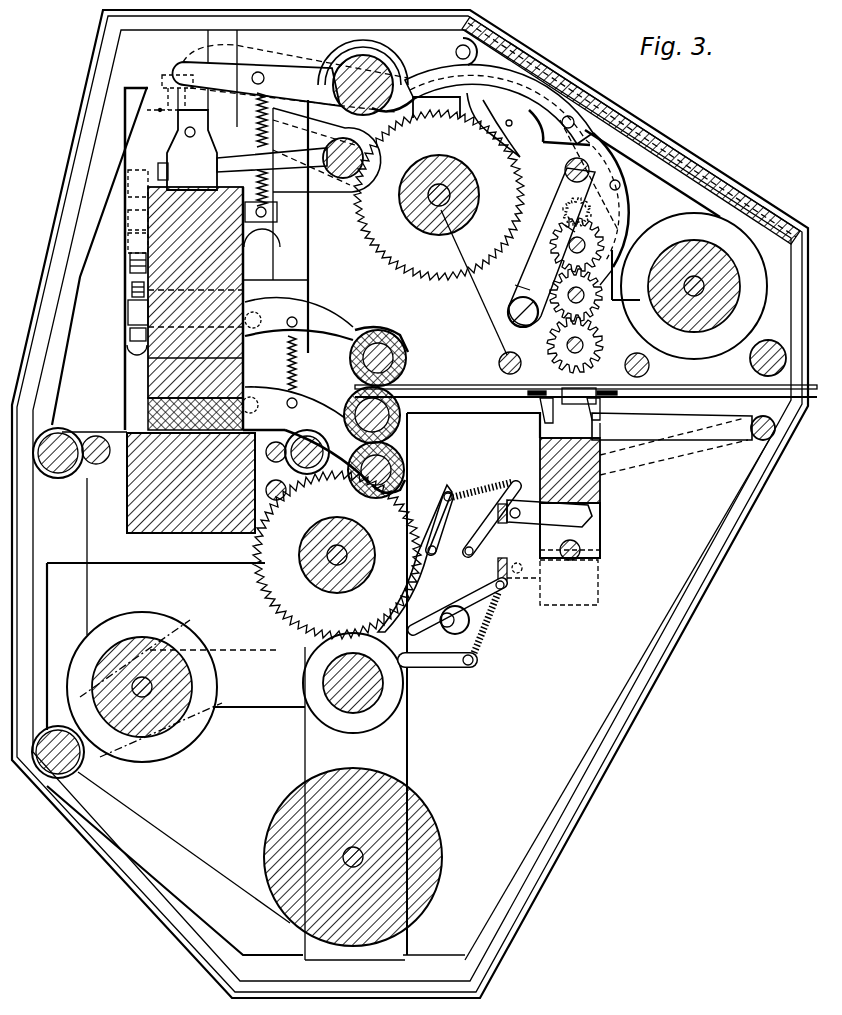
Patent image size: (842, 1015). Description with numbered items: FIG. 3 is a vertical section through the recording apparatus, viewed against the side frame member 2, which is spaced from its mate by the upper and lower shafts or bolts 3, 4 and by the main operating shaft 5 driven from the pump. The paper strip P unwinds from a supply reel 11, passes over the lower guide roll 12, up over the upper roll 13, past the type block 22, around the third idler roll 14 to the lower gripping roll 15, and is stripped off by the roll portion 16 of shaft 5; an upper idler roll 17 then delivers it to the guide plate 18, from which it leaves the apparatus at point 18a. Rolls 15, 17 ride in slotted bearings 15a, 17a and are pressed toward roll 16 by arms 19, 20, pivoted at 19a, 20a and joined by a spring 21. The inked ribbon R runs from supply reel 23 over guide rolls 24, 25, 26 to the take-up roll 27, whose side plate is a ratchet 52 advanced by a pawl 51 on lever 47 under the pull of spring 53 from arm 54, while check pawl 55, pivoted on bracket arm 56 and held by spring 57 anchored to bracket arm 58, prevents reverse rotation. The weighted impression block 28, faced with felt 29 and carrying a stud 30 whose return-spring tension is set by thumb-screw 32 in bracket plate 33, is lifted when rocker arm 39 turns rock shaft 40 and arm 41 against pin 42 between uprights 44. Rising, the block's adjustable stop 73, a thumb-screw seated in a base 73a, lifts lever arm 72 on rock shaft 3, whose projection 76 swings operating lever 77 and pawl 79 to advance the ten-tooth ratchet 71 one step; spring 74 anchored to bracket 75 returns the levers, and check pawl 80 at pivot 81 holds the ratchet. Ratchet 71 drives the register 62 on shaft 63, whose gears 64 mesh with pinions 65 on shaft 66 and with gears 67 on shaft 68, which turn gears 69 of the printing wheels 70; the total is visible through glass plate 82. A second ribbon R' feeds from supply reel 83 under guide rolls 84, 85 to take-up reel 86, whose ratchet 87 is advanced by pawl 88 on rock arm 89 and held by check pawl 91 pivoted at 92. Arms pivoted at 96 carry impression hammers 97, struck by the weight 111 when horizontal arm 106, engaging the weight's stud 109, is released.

The side frame member 2 is at (700, 193).
The upper shaft or bolt 3 is at (369, 62).
The lower shaft or bolt 4 is at (370, 692).
The shaft (main operating element) 5 is at (410, 433).
The supply reel 11 is at (417, 813).
The lower idler or guide roll 12 is at (78, 777).
The upper roll 13 is at (60, 475).
The third idler roll 14 is at (307, 442).
The lower gripping roll 15 is at (410, 468).
The slotted bearing 15a is at (410, 475).
The feeding roll portion 16 is at (410, 438).
The idler roll 17 is at (407, 365).
The slotted bearing 17a is at (353, 363).
The guide plate 18 is at (508, 398).
The exit point 18a is at (800, 400).
The spring-actuated arm 19 is at (337, 318).
The pivot point 19a is at (267, 303).
The spring-actuated arm 20 is at (320, 410).
The pivot point 20a is at (258, 384).
The spring 21 is at (286, 348).
The block 22 is at (188, 533).
The supply reel 23 is at (186, 687).
The guide roll 24 is at (98, 462).
The second guide roll 25 is at (274, 440).
The third guide roll 26 is at (287, 489).
The take-up roll 27 is at (264, 583).
The impression block 28 is at (147, 383).
The resilient strip 29 is at (147, 412).
The stud or pin 30 is at (128, 262).
The thumb-screw 32 is at (130, 336).
The bracket plate 33 is at (128, 309).
The rocker arm 39 is at (293, 188).
The rock shaft 40 is at (323, 150).
The arm 41 is at (215, 162).
The lateral pin or stud 42 is at (194, 139).
The fixed upright 44 is at (177, 157).
The lever 47 is at (447, 523).
The pawl 51 is at (427, 587).
The ratchet 52 is at (278, 605).
The spring 53 is at (500, 481).
The arm 54 is at (485, 533).
The check pawl 55 is at (453, 600).
The horizontal fixed bracket arm 56 is at (481, 627).
The spring 57 is at (486, 650).
The second horizontal bracket arm 58 is at (458, 670).
The register 62 is at (594, 306).
The shaft 63 is at (550, 233).
The gears 64 is at (550, 240).
The pinions 65 is at (573, 208).
The shaft 66 is at (568, 222).
The gears 67 is at (616, 275).
The shaft 68 is at (568, 300).
The gears 69 is at (600, 333).
The printing wheels 70 is at (602, 348).
The ratchet 71 is at (622, 222).
The lever arm 72 is at (290, 77).
The adjustable stop 73 is at (173, 76).
The catch point 73a is at (157, 112).
The spring 74 is at (270, 132).
The fixed horizontal bracket 75 is at (275, 228).
The projection 76 is at (384, 62).
The operating lever 77 is at (478, 77).
The pawl 79 is at (613, 173).
The check pawl 80 is at (515, 285).
The pivot 81 is at (508, 311).
The glass plate 82 is at (680, 150).
The supply reel 83 is at (690, 248).
The guide roll 84 is at (623, 366).
The guide roll 85 is at (499, 366).
The take-up reel 86 is at (450, 233).
The ratchet 87 is at (377, 252).
The operating pawl 88 is at (563, 167).
The rock arm 89 is at (458, 108).
The check pawl 91 is at (487, 107).
The pivot 92 is at (456, 52).
The pivot 96 is at (671, 480).
The impression hammers 97 is at (543, 417).
The horizontal arm 106 is at (592, 518).
The lateral pin or stud 109 is at (582, 550).
The weight 111 is at (600, 490).
The strip of paper P is at (33, 540).
The inked ribbon R is at (170, 543).
The inked ribbon R' is at (609, 295).